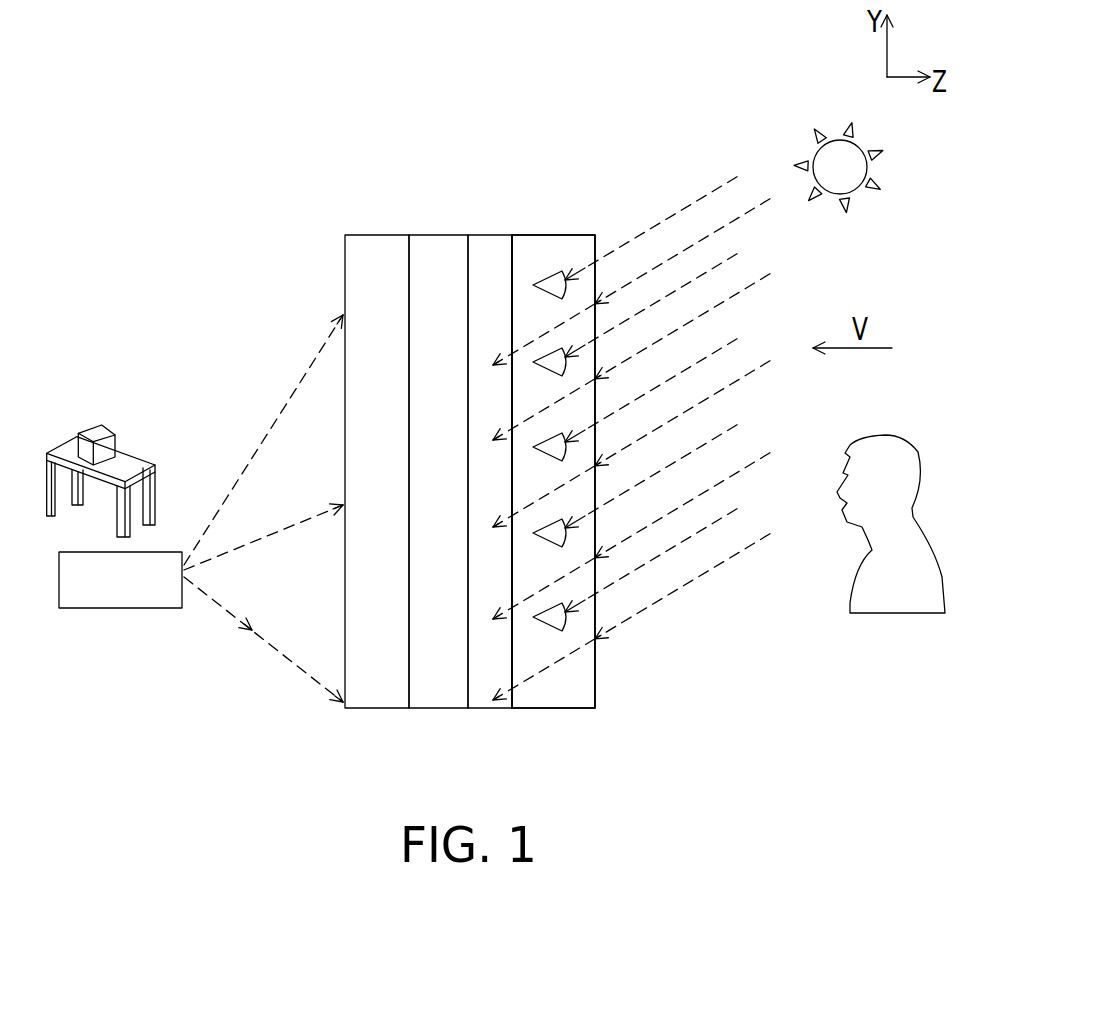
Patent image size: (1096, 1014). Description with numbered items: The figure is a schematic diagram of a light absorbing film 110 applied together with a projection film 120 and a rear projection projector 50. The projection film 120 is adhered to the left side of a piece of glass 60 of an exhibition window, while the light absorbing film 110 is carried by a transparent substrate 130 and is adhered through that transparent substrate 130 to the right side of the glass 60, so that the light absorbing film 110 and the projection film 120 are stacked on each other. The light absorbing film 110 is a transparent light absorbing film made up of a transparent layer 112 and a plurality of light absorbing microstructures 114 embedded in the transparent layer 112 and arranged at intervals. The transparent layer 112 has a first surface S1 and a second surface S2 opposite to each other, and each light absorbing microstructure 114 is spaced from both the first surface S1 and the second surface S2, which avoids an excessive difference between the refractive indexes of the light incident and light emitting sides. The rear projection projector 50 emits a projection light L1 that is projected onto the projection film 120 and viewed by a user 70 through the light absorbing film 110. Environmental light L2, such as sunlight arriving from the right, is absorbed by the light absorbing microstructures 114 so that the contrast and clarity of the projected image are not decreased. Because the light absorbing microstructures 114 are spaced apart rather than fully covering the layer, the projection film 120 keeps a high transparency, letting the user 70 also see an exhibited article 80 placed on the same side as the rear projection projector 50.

The rear projection projector 50 is at (120, 608).
The glass 60 is at (437, 231).
The user 70 is at (903, 437).
The exhibited article 80 is at (85, 445).
The light absorbing film 110 is at (560, 231).
The transparent layer 112 is at (577, 693).
The light absorbing microstructures 114 is at (567, 617).
The projection film 120 is at (378, 231).
The transparent substrate 130 is at (487, 232).
The first surface S1 is at (511, 322).
The second surface S2 is at (597, 277).
The projection light L1 is at (245, 636).
The environmental light L2 is at (682, 212).